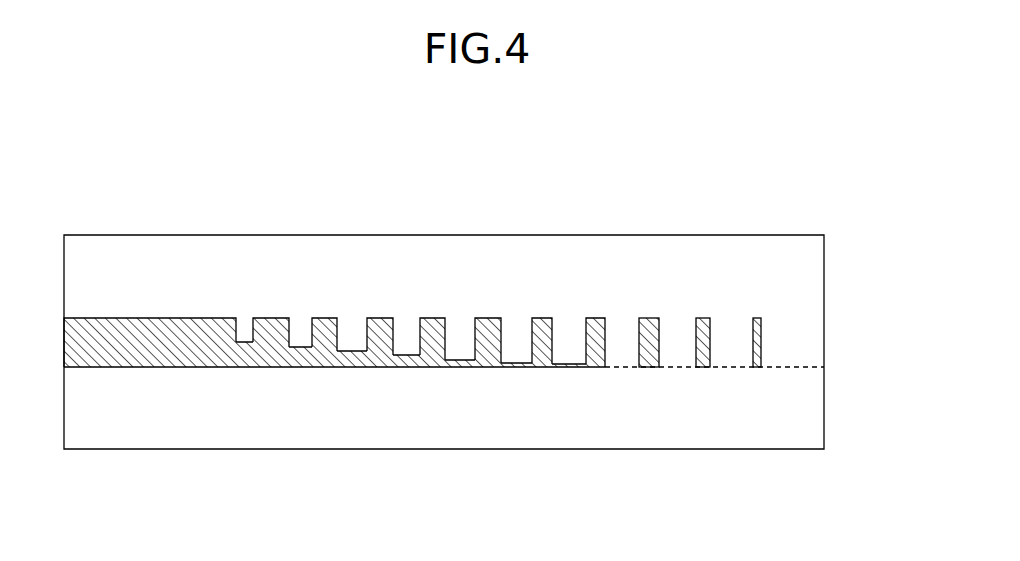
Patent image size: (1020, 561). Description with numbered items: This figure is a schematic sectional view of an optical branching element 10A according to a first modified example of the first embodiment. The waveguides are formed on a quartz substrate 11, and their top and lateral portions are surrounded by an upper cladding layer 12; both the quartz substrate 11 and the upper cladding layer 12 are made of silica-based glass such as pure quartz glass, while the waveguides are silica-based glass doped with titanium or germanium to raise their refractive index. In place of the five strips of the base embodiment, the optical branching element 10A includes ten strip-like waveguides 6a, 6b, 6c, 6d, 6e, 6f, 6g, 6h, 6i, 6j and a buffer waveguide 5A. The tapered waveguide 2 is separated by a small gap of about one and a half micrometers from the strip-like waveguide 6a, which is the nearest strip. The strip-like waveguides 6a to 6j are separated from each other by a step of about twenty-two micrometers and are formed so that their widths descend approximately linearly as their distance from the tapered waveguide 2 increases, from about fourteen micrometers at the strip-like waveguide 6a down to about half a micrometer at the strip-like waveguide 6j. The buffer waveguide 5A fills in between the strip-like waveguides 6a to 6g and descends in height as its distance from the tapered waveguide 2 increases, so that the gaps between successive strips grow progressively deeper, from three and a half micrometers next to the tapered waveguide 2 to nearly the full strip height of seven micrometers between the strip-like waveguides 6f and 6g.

The tapered waveguide 2 is at (172, 318).
The buffer waveguide 5A is at (555, 367).
The strip-like waveguide 6a is at (270, 318).
The strip-like waveguide 6b is at (324, 318).
The strip-like waveguide 6c is at (380, 318).
The strip-like waveguide 6d is at (432, 318).
The strip-like waveguide 6e is at (486, 318).
The strip-like waveguide 6f is at (543, 318).
The strip-like waveguide 6g is at (597, 318).
The strip-like waveguide 6h is at (653, 318).
The strip-like waveguide 6i is at (705, 318).
The strip-like waveguide 6j is at (758, 318).
The optical branching element 10A is at (803, 184).
The quartz substrate 11 is at (811, 409).
The upper cladding layer 12 is at (811, 301).